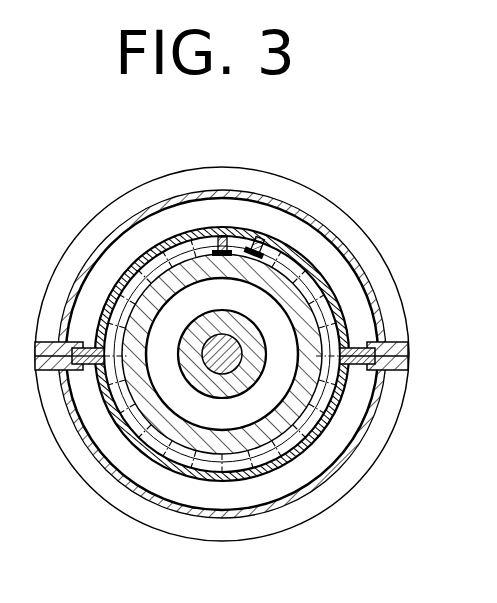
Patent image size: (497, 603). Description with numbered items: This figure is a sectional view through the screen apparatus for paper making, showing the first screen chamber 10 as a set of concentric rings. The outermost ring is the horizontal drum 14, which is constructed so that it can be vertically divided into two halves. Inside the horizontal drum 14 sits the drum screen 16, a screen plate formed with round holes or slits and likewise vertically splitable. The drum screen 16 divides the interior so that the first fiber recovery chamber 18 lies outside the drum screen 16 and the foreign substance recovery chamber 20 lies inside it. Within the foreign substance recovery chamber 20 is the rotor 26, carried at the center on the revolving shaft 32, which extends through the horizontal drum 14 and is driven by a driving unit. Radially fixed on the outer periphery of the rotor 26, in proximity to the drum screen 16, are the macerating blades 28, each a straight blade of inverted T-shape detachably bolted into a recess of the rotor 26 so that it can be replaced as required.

The first screen chamber 10 is at (331, 195).
The horizontal drum 14 is at (285, 188).
The drum screen 16 is at (305, 262).
The first fiber recovery chamber 18 is at (357, 412).
The foreign substance recovery chamber 20 is at (280, 468).
The rotor 26 is at (160, 240).
The macerating blades 28 is at (214, 250).
The revolving shaft 32 is at (238, 397).